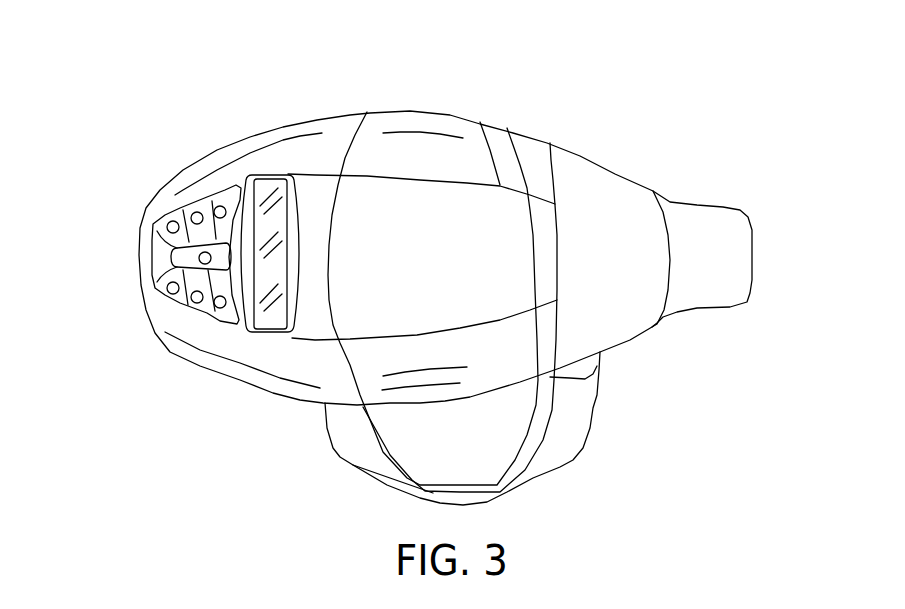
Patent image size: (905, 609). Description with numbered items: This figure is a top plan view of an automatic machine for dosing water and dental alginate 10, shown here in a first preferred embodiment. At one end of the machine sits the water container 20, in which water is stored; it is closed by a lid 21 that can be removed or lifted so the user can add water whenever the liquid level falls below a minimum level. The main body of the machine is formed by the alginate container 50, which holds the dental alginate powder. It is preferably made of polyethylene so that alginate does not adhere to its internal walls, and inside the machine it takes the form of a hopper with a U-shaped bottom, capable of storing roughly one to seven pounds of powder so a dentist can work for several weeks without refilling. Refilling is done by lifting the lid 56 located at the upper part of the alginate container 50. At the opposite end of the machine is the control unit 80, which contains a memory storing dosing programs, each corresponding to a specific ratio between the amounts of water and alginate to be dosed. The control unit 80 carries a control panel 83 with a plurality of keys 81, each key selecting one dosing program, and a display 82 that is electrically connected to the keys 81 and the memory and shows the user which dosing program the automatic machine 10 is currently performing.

The automatic machine for dosing water and dental alginate 10 is at (126, 78).
The water container 20 is at (527, 487).
The lid 21 is at (443, 450).
The alginate container 50 is at (407, 122).
The lid 56 is at (463, 197).
The control unit 80 is at (218, 185).
The keys 81 is at (172, 294).
The display 82 is at (268, 318).
The control panel 83 is at (160, 257).